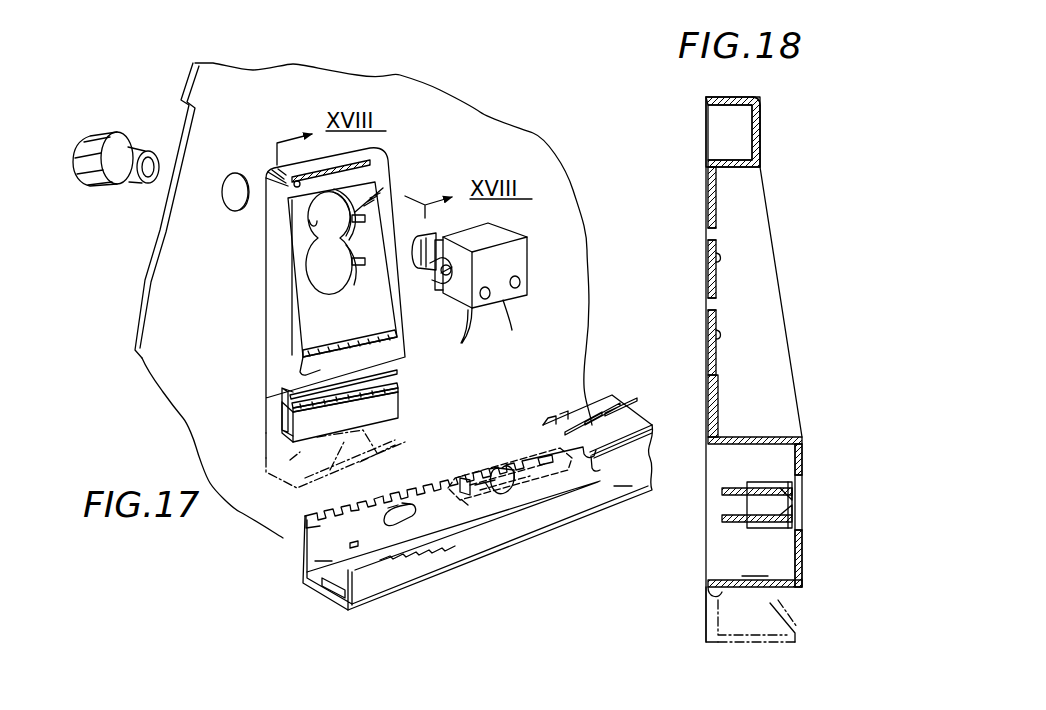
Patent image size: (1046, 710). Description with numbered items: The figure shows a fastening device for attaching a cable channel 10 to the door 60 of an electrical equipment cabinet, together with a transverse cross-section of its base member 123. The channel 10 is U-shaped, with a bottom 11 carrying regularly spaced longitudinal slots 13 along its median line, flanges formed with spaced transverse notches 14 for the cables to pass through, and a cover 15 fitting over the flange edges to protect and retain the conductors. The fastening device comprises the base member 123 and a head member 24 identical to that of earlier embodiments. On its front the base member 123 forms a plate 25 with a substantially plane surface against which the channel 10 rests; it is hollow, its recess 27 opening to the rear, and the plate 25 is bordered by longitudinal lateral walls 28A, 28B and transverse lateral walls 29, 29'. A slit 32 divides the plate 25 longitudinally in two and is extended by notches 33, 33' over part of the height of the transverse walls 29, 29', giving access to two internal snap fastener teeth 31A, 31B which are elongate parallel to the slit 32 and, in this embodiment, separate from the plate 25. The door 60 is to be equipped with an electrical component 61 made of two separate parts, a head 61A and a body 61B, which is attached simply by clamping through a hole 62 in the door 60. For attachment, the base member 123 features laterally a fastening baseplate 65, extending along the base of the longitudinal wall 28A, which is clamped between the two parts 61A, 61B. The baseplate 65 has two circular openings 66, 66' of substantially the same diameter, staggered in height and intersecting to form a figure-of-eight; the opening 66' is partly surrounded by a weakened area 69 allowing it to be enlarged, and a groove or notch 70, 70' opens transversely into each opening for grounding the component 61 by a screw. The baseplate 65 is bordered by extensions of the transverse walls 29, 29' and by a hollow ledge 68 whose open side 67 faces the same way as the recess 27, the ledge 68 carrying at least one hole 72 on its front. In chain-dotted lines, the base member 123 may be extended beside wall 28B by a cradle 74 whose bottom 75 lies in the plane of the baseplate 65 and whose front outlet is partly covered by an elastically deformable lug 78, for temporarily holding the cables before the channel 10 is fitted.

In FIG. 17, the channel 10 is at (618, 394).
In FIG. 17, the bottom 11 is at (380, 539).
In FIG. 17, the longitudinal slots 13 is at (405, 510).
In FIG. 17, the transverse notches 14 is at (640, 403).
In FIG. 17, the cover 15 is at (597, 441).
In FIG. 17, the head member 24 is at (528, 444).
In FIG. 17, the plate 25 is at (350, 372).
In FIG. 18, the plate 25 is at (803, 573).
In FIG. 18, the recess 27 is at (717, 540).
In FIG. 17, the longitudinal lateral wall 28A is at (313, 358).
In FIG. 18, the longitudinal lateral wall 28A is at (755, 437).
In FIG. 17, the longitudinal lateral wall 28B is at (273, 443).
In FIG. 18, the longitudinal lateral wall 28B is at (717, 590).
In FIG. 17, the transverse lateral wall 29 is at (296, 417).
In FIG. 18, the transverse lateral wall 29' is at (756, 566).
In FIG. 17, the snap fastener tooth 31A is at (400, 372).
In FIG. 18, the snap fastener tooth 31A is at (795, 492).
In FIG. 17, the snap fastener tooth 31B is at (398, 390).
In FIG. 18, the snap fastener tooth 31B is at (795, 520).
In FIG. 18, the slit 32 is at (806, 478).
In FIG. 17, the notch 33 is at (256, 412).
In FIG. 18, the notch 33 is at (763, 491).
In FIG. 17, the notch 33' is at (429, 370).
In FIG. 17, the door 60 is at (507, 122).
In FIG. 17, the electrical component 61 is at (424, 283).
In FIG. 17, the head 61A is at (130, 130).
In FIG. 17, the body 61B is at (535, 255).
In FIG. 17, the hole 62 is at (226, 180).
In FIG. 18, the fastening baseplate 65 is at (708, 390).
In FIG. 17, the opening 66 is at (331, 261).
In FIG. 18, the opening 66 is at (692, 306).
In FIG. 17, the opening 66' is at (271, 232).
In FIG. 18, the opening 66' is at (689, 235).
In FIG. 18, the open side 67 is at (717, 123).
In FIG. 17, the ledge 68 is at (372, 170).
In FIG. 18, the ledge 68 is at (762, 120).
In FIG. 17, the weakened area 69 is at (384, 187).
In FIG. 17, the groove or notch 70 is at (386, 237).
In FIG. 18, the groove or notch 70 is at (739, 324).
In FIG. 17, the groove or notch 70' is at (400, 198).
In FIG. 18, the groove or notch 70' is at (740, 247).
In FIG. 17, the hole 72 is at (290, 178).
In FIG. 17, the cradle 74 is at (286, 489).
In FIG. 18, the cradle 74 is at (775, 648).
In FIG. 18, the bottom 75 is at (708, 630).
In FIG. 18, the elastically deformable lug 78 is at (790, 627).
In FIG. 17, the base member 123 is at (256, 313).
In FIG. 18, the base member 123 is at (797, 327).